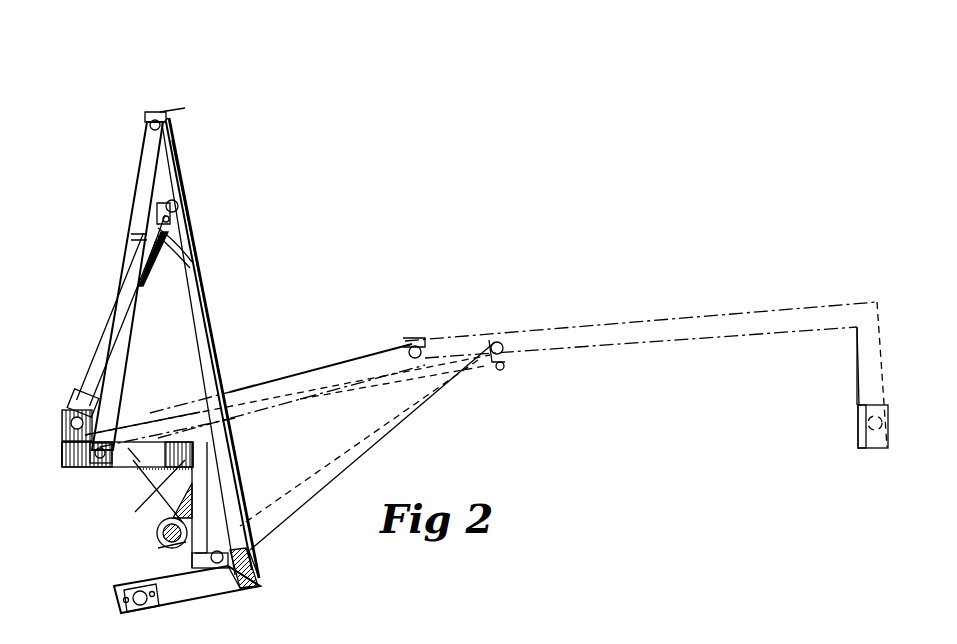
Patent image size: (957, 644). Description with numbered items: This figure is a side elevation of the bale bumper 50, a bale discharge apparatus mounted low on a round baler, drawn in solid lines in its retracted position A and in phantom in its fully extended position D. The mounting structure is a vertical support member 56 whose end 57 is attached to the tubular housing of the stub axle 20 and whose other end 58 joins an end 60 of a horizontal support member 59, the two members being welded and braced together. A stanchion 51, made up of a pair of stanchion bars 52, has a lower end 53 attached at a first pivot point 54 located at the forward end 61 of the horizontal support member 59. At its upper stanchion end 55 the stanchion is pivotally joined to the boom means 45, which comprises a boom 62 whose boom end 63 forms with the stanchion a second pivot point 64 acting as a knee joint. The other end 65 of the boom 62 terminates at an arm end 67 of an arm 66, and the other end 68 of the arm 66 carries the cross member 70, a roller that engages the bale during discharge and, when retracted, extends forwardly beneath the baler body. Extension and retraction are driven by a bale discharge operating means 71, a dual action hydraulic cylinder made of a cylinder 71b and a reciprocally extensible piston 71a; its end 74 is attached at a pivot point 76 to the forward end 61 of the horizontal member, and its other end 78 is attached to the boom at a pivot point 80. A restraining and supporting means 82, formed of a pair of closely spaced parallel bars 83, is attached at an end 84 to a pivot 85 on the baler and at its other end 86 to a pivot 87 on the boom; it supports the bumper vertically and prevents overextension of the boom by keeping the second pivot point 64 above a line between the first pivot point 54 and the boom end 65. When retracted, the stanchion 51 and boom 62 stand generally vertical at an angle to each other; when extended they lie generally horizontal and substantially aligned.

The axle 20 is at (160, 550).
The boom means 45 is at (213, 289).
The bale bumper 50 is at (137, 99).
The stanchion 51 is at (133, 205).
The stanchion bar 52 is at (131, 238).
The lower end of stanchion 53 is at (103, 462).
The first pivot point 54 is at (93, 467).
The upper stanchion end 55 is at (150, 137).
The vertical support member 56 is at (158, 534).
The end of vertical support member 57 is at (195, 556).
The other end of vertical support member 58 is at (198, 468).
The horizontal support member 59 is at (140, 462).
The end of horizontal support member 60 is at (155, 491).
The forward end of horizontal support member 61 is at (68, 466).
The boom 62 is at (224, 425).
The boom end 63 is at (166, 114).
The second pivot point 64 is at (152, 118).
The other end of boom 65 is at (259, 569).
The arm 66 is at (212, 596).
The arm end 67 is at (259, 588).
The other end of arm 68 is at (122, 606).
The cross member 70 is at (172, 606).
The bale discharge operating means 71 is at (97, 318).
The piston 71a is at (188, 262).
The cylinder 71b is at (100, 320).
The end of operating means 74 is at (121, 414).
The pivot point 76 is at (70, 420).
The other end of operating means 78 is at (166, 240).
The pivot point 80 is at (176, 220).
The restraining and supporting means 82 is at (209, 308).
The parallel bars 83 is at (193, 353).
The end of restraining and supporting means 84 is at (256, 533).
The pivot 85 is at (226, 552).
The other end of restraining and supporting means 86 is at (180, 214).
The pivot 87 is at (174, 203).
The retracted position A is at (183, 147).
The fully extended position D is at (750, 298).